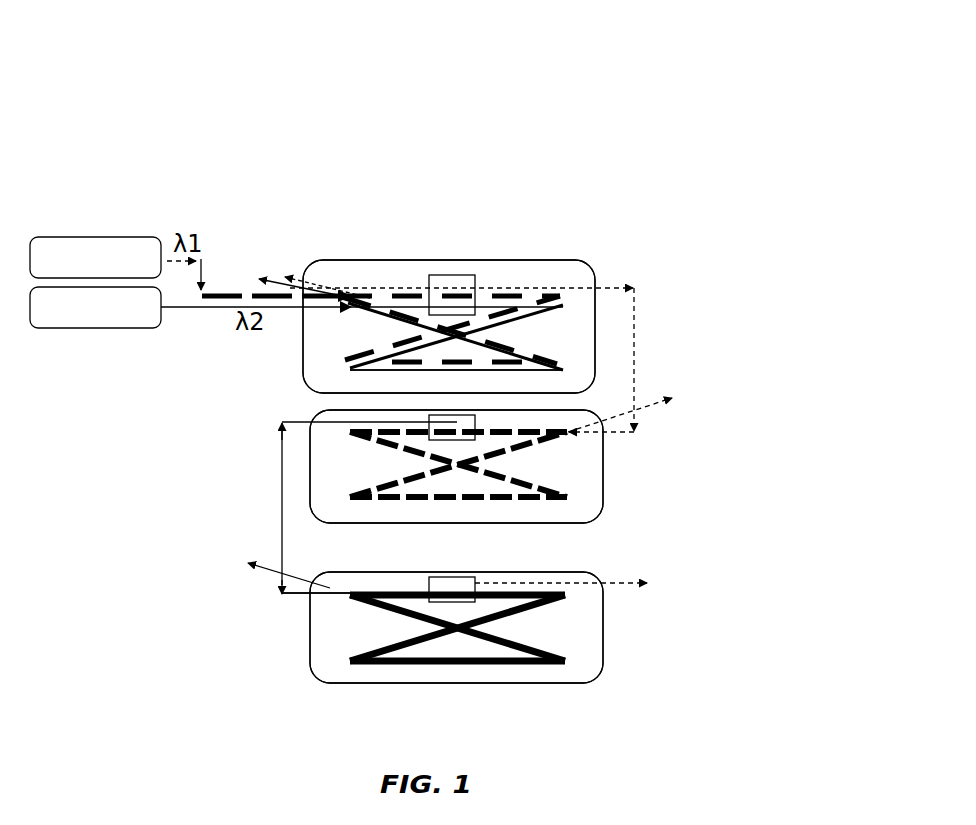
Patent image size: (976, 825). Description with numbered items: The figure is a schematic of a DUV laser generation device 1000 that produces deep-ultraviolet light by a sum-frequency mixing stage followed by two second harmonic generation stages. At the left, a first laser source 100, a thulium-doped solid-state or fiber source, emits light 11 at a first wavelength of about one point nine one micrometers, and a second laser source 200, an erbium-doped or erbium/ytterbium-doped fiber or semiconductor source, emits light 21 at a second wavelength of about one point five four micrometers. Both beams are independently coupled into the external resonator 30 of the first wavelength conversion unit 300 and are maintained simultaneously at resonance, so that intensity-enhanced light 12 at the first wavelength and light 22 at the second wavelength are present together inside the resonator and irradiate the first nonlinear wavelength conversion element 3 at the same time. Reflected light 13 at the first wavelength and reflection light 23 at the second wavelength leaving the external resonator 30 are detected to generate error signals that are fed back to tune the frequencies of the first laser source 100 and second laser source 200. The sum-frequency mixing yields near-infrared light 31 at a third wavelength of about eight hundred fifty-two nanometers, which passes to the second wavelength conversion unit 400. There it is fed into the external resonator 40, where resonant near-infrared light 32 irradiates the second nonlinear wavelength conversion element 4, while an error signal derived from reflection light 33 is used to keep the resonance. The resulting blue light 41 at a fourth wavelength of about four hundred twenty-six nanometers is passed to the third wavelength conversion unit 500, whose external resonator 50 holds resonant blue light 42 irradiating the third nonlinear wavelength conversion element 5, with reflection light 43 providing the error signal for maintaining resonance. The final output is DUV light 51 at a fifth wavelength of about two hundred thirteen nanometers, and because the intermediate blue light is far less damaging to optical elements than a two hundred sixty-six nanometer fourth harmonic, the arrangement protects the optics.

The DUV laser generation device 1000 is at (117, 80).
The first laser source 100 is at (68, 236).
The second laser source 200 is at (93, 331).
The light at second wavelength 21 is at (208, 314).
The light at first wavelength 11 is at (222, 288).
The reflection light at second wavelength 23 is at (272, 277).
The reflected light at first wavelength 13 is at (318, 282).
The light at first wavelength inside resonator 12 is at (405, 285).
The first nonlinear wavelength conversion element 3 is at (473, 273).
The external resonator 30 is at (560, 258).
The near-infrared light at third wavelength 31 is at (612, 287).
The reflection light 33 is at (660, 398).
The first wavelength conversion unit 300 is at (727, 321).
The light at second wavelength inside resonator 22 is at (352, 377).
The blue light at fourth wavelength 41 is at (277, 454).
The second nonlinear wavelength conversion element 4 is at (423, 448).
The second wavelength conversion unit 400 is at (727, 461).
The near-infrared light at third wavelength in resonator 32 is at (563, 482).
The external resonator 40 is at (608, 515).
The reflection light 43 is at (277, 578).
The third nonlinear wavelength conversion element 5 is at (440, 608).
The DUV light at fifth wavelength 51 is at (638, 574).
The blue light at fourth wavelength in resonator 42 is at (563, 645).
The third wavelength conversion unit 500 is at (727, 621).
The external resonator 50 is at (608, 675).